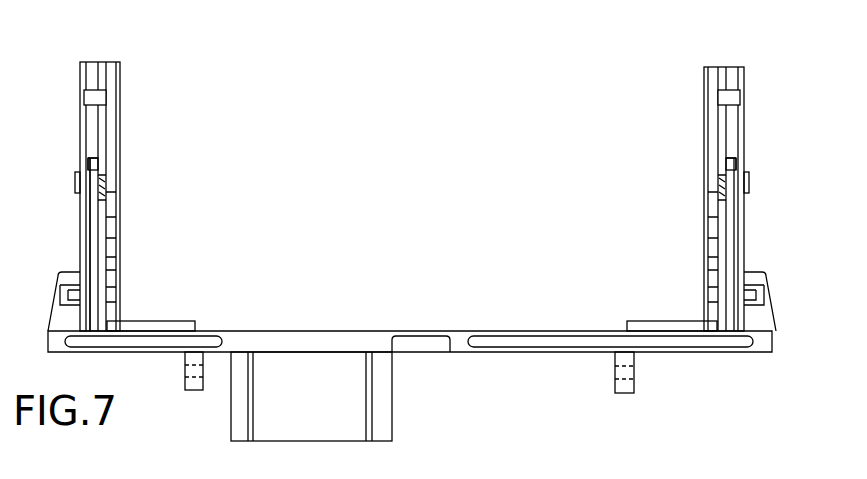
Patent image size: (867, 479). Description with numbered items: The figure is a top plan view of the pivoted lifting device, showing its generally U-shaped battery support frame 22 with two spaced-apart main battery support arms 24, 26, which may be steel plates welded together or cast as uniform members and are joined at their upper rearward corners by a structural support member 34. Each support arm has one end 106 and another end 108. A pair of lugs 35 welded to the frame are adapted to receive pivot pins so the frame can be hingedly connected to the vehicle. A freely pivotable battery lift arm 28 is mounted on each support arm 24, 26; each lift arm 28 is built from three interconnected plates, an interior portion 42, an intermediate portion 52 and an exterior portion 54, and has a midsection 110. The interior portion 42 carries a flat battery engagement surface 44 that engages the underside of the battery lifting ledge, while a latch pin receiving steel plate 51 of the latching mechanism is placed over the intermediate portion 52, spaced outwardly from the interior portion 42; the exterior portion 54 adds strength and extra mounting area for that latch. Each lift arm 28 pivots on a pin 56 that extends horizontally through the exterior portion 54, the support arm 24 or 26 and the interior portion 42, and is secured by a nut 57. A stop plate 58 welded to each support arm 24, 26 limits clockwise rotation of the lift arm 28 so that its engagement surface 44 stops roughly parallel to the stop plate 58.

The battery support frame 22 is at (450, 330).
The main battery support arm 24 is at (730, 258).
The main battery support arm 26 is at (90, 247).
The battery lift arm 28 is at (80, 127).
The structural support member 34 is at (464, 348).
The lug 35 is at (196, 390).
The interior portion 42 is at (120, 143).
The battery engagement surface 44 is at (115, 118).
The steel plate 51 is at (84, 97).
The intermediate portion 52 is at (97, 66).
The exterior portion 54 is at (86, 62).
The pin 56 is at (110, 186).
The nut 57 is at (78, 197).
The stop plate 58 is at (110, 257).
The one end 106 is at (93, 313).
The another end 108 is at (98, 160).
The midsection 110 is at (110, 157).